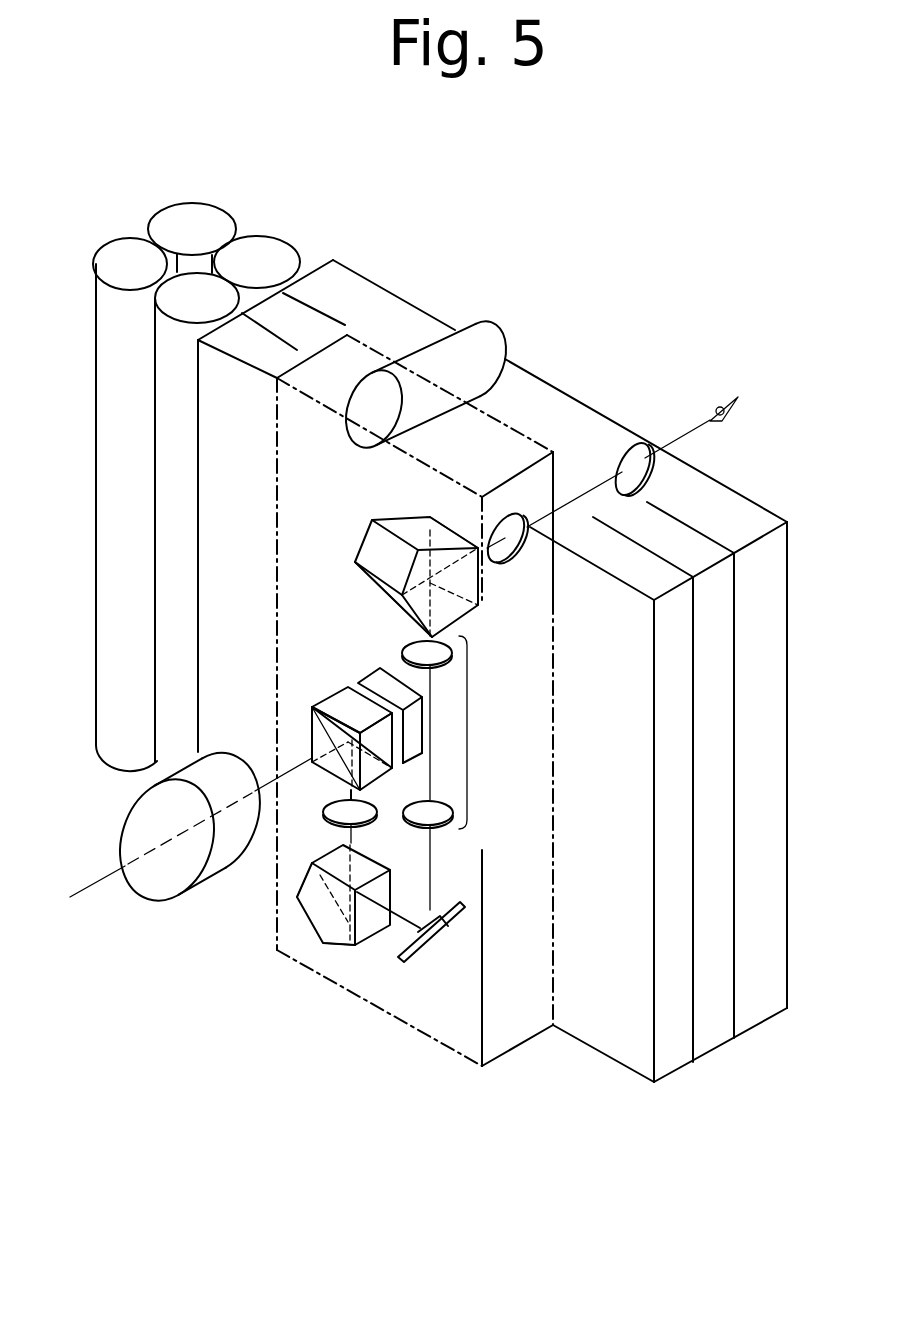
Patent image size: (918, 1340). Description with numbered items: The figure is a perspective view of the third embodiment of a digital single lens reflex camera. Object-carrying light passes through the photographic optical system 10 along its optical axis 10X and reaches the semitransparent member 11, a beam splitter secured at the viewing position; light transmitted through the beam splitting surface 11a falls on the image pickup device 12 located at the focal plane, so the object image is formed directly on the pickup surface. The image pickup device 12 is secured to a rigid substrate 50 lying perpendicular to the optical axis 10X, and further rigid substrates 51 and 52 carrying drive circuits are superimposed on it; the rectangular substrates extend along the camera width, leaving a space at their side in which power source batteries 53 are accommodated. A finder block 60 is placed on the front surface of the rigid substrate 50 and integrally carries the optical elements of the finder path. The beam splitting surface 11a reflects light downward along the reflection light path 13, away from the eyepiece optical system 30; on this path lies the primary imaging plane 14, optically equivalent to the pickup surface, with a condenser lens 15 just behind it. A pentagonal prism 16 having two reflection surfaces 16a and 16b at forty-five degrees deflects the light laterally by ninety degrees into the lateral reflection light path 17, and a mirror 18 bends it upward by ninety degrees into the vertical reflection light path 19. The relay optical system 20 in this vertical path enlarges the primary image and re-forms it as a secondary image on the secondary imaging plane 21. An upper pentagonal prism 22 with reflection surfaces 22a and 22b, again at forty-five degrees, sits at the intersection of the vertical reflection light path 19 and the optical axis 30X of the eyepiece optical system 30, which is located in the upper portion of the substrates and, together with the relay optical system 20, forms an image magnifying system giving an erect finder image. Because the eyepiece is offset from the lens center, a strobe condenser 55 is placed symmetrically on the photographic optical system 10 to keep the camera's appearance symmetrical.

The photographic optical system 10 is at (180, 893).
The optical axis of the photographic optical system 10X is at (98, 882).
The semitransparent member 11 is at (337, 697).
The beam splitting surface 11a is at (330, 732).
The image pickup device 12 is at (367, 673).
The reflection light path 13 is at (356, 843).
The primary imaging plane 14 is at (383, 783).
The condenser lens 15 is at (332, 820).
The pentagonal prism 16 is at (312, 935).
The reflection surface 16a is at (340, 957).
The reflection surface 16b is at (307, 877).
The lateral reflection light path 17 is at (402, 932).
The mirror 18 is at (442, 925).
The vertical reflection light path 19 is at (430, 870).
The relay optical system 20 is at (468, 733).
The secondary imaging plane 21 is at (478, 612).
The pentagonal prism 22 is at (377, 530).
The reflection surface 22a is at (410, 527).
The reflection surface 22b is at (378, 593).
The eyepiece optical system 30 is at (640, 497).
The optical axis of the eyepiece optical system 30X is at (511, 566).
The rigid substrate 50 is at (675, 1067).
The rigid substrate 51 is at (712, 1048).
The rigid substrate 52 is at (755, 1024).
The power source batteries 53 is at (215, 220).
The strobe condenser 55 is at (468, 320).
The finder block 60 is at (505, 1047).